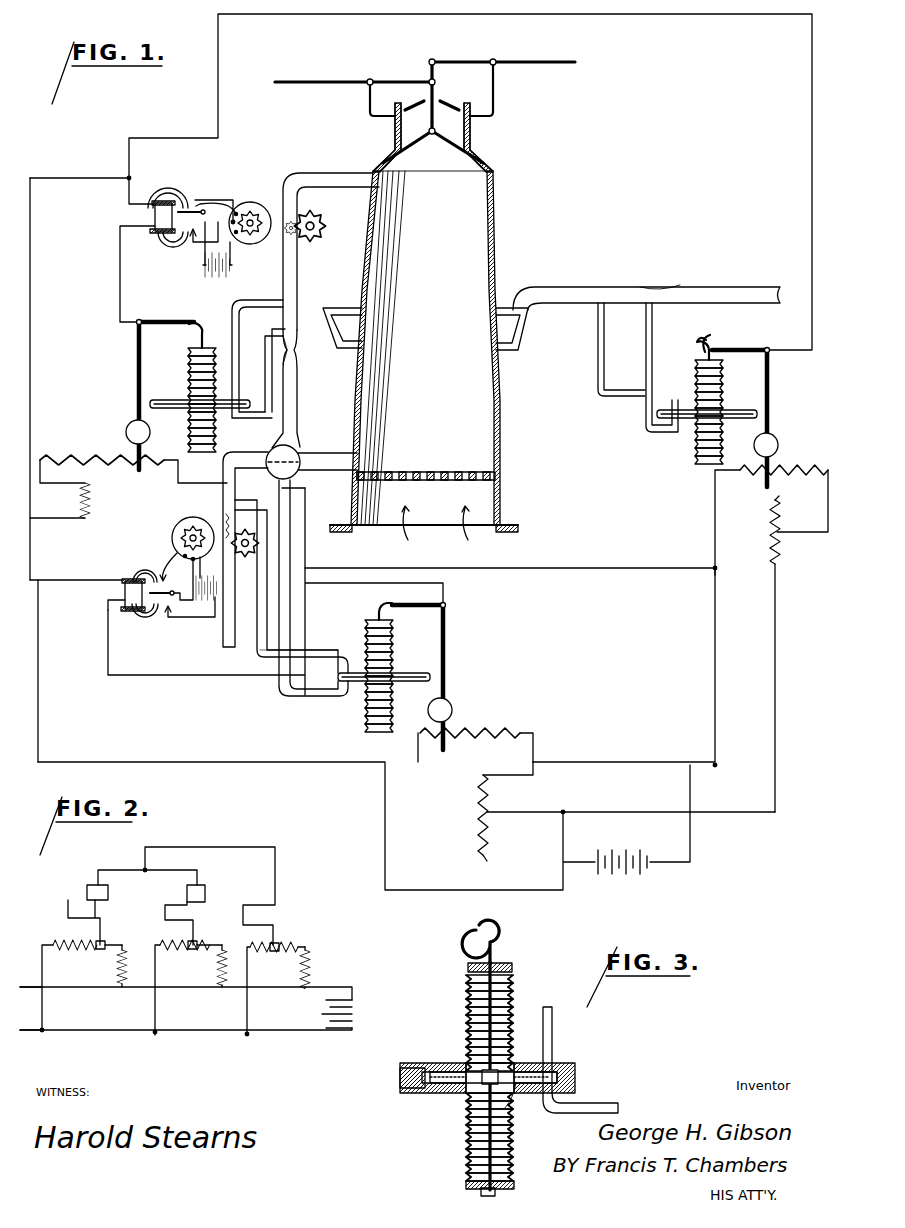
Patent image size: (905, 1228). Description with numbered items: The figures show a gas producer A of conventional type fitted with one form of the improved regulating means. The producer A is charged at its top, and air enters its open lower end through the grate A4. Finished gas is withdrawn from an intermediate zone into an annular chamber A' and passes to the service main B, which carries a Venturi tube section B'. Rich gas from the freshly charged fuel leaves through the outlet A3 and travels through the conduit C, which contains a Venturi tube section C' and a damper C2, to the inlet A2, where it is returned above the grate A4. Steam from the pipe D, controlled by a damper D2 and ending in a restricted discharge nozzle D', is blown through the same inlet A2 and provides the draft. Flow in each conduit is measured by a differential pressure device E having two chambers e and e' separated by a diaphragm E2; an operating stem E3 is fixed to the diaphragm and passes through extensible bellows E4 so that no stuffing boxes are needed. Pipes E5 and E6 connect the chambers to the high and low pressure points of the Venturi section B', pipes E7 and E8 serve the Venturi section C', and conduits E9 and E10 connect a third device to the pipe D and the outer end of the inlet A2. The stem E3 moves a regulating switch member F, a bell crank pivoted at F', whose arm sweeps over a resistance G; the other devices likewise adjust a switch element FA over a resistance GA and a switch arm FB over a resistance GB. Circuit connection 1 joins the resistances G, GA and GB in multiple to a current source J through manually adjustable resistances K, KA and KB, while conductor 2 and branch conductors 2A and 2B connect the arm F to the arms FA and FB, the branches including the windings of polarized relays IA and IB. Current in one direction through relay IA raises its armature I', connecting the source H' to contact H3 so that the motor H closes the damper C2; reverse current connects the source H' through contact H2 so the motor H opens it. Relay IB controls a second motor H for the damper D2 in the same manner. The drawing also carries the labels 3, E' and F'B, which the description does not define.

In FIG. 1, the circuit connection 1 is at (40, 604).
In FIG. 2, the circuit connection 1 is at (46, 1000).
In FIG. 1, the conductor 2 is at (127, 155).
In FIG. 2, the conductor 2 is at (213, 850).
In FIG. 2, the circuit conductor 3 is at (127, 870).
In FIG. 1, the branch conductor 2A is at (128, 200).
In FIG. 1, the branch conductor 2B is at (30, 336).
In FIG. 1, the polarized relay IA is at (150, 208).
In FIG. 2, the polarized relay IA is at (206, 895).
In FIG. 1, the polarized relay IB is at (112, 598).
In FIG. 2, the polarized relay IB is at (86, 886).
In FIG. 1, the armature I' is at (191, 192).
In FIG. 1, the gas producer A is at (425, 299).
In FIG. 1, the annular chamber A' is at (442, 329).
In FIG. 1, the inlet A2 is at (320, 448).
In FIG. 1, the outlet A3 is at (334, 198).
In FIG. 1, the grate A4 is at (408, 470).
In FIG. 1, the service main B is at (646, 285).
In FIG. 1, the Venturi tube section B' is at (660, 278).
In FIG. 1, the conduit C is at (325, 310).
In FIG. 1, the Venturi tube section C' is at (299, 344).
In FIG. 1, the damper C2 is at (300, 236).
In FIG. 1, the steam pipe D is at (228, 563).
In FIG. 1, the restricted discharge nozzle D' is at (268, 455).
In FIG. 1, the damper D2 is at (232, 516).
In FIG. 1, the differential pressure device E is at (453, 527).
In FIG. 3, the differential pressure device E is at (487, 1059).
In FIG. 1, the regulator arm E' is at (784, 388).
In FIG. 1, the diaphragm E2 is at (778, 444).
In FIG. 3, the diaphragm E2 is at (430, 1082).
In FIG. 1, the operating stem E3 is at (700, 334).
In FIG. 3, the operating stem E3 is at (478, 1000).
In FIG. 3, the extensible bellows E4 is at (500, 1000).
In FIG. 1, the pipe E5 is at (598, 396).
In FIG. 1, the pipe E6 is at (650, 372).
In FIG. 1, the pipe E7 is at (236, 346).
In FIG. 3, the pipe E7 is at (555, 1030).
In FIG. 1, the pipe E8 is at (270, 378).
In FIG. 3, the pipe E8 is at (600, 1104).
In FIG. 1, the conduit E9 is at (306, 657).
In FIG. 1, the conduit E10 is at (284, 704).
In FIG. 3, the chamber e is at (493, 1059).
In FIG. 3, the chamber e' is at (525, 1111).
In FIG. 2, the regulating switch member F is at (281, 932).
In FIG. 1, the pivot F' is at (741, 403).
In FIG. 1, the regulating switch element FA is at (136, 364).
In FIG. 2, the regulating switch element FA is at (196, 940).
In FIG. 2, the switch arm FB is at (97, 942).
In FIG. 1, the contact arm F'B is at (439, 677).
In FIG. 1, the electrical resistance G is at (790, 480).
In FIG. 2, the electrical resistance G is at (280, 980).
In FIG. 1, the resistance GA is at (118, 452).
In FIG. 2, the resistance GA is at (168, 932).
In FIG. 1, the resistance GB is at (474, 734).
In FIG. 2, the resistance GB is at (82, 985).
In FIG. 1, the reversible electric motor H is at (216, 377).
In FIG. 1, the source of current H' is at (206, 443).
In FIG. 1, the motor contact H2 is at (193, 232).
In FIG. 1, the terminal contact H3 is at (200, 204).
In FIG. 1, the source of current J is at (607, 858).
In FIG. 2, the source of current J is at (362, 1000).
In FIG. 1, the manually adjustable resistance K is at (768, 522).
In FIG. 2, the manually adjustable resistance K is at (310, 970).
In FIG. 1, the manually adjustable resistance KA is at (90, 498).
In FIG. 2, the manually adjustable resistance KA is at (218, 970).
In FIG. 1, the manually adjustable resistance KB is at (488, 800).
In FIG. 2, the manually adjustable resistance KB is at (118, 970).